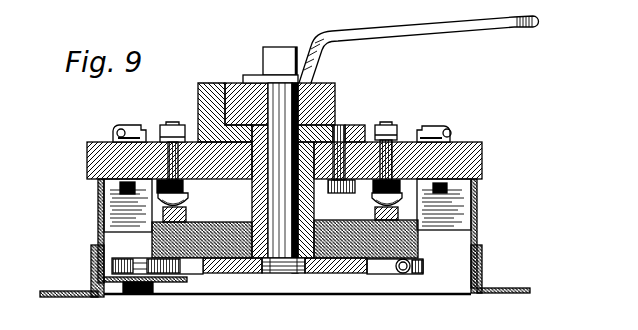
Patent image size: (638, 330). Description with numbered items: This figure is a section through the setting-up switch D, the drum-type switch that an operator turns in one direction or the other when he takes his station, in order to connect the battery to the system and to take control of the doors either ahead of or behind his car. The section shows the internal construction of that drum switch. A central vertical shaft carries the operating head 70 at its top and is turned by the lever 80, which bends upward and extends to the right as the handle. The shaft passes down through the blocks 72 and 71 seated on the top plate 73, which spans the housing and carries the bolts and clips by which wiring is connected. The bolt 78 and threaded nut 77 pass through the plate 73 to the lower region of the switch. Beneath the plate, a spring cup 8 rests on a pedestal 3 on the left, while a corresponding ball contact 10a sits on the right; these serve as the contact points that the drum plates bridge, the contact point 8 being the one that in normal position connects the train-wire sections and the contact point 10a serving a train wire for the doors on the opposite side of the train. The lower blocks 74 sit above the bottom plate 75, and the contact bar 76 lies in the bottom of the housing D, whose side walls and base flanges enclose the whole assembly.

The setting-up switch D is at (285, 238).
The pedestal 3 is at (190, 214).
The contact point 8 is at (186, 204).
The contact point 10a is at (383, 206).
The shaft head 70 is at (272, 62).
The right block 71 is at (338, 95).
The left block 72 is at (198, 97).
The top plate 73 is at (87, 152).
The lower block 74 is at (416, 244).
The bottom plate 75 is at (338, 275).
The contact bar 76 is at (185, 274).
The threaded nut 77 is at (358, 126).
The bolt 78 is at (314, 184).
The lever handle 80 is at (413, 35).